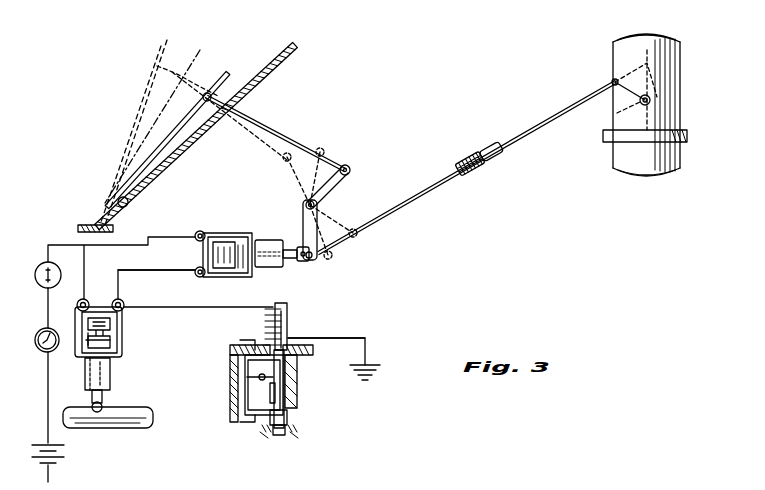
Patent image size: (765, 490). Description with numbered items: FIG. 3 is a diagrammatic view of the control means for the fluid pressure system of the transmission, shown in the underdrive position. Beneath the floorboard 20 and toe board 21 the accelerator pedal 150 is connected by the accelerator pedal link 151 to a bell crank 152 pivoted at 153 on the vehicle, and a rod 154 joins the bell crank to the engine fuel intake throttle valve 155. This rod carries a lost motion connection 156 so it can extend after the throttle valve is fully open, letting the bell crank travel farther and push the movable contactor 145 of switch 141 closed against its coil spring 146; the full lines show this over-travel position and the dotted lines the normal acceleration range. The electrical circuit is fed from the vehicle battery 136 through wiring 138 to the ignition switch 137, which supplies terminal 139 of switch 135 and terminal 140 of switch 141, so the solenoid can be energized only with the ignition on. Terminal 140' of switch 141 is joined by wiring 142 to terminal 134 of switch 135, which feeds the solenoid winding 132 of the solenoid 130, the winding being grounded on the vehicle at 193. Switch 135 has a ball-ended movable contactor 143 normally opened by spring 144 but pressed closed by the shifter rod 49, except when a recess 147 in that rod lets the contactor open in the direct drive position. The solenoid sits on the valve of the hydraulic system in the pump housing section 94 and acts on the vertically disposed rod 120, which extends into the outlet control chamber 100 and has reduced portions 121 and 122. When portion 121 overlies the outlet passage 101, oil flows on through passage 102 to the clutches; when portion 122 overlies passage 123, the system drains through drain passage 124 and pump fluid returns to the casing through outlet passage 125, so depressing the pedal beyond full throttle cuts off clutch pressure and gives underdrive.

The floorboard 20 is at (83, 223).
The toe board 21 is at (292, 56).
The rod 49 is at (140, 430).
The pump housing section 94 is at (262, 425).
The outlet control chamber 100 is at (290, 420).
The outlet passage 101 is at (245, 405).
The passage 102 is at (235, 360).
The rod 120 is at (287, 395).
The reduced portion 121 is at (290, 403).
The reduced valve portion 122 is at (240, 340).
The passage 123 is at (230, 349).
The drain passage 124 is at (302, 355).
The outlet passage 125 is at (245, 378).
The solenoid 130 is at (262, 325).
The solenoid winding 132 is at (292, 322).
The terminal 134 is at (124, 303).
The switch 135 is at (121, 346).
The vehicle battery 136 is at (60, 462).
The ignition switch 137 is at (58, 284).
The wiring 138 is at (47, 411).
The terminal 139 is at (87, 299).
The terminal 140 is at (197, 223).
The terminal 140' is at (214, 285).
The switch 141 is at (250, 234).
The wiring 142 is at (160, 268).
The movable contactor 143 is at (80, 350).
The spring 144 is at (118, 326).
The movable contactor 145 is at (264, 250).
The coil spring 146 is at (230, 240).
The recess 147 is at (103, 418).
The accelerator pedal 150 is at (225, 68).
The accelerator pedal link 151 is at (303, 145).
The bell crank 152 is at (345, 186).
The pivot 153 is at (320, 207).
The rod 154 is at (560, 115).
The throttle valve 155 is at (668, 118).
The lost motion connection 156 is at (470, 154).
The ground 193 is at (382, 382).